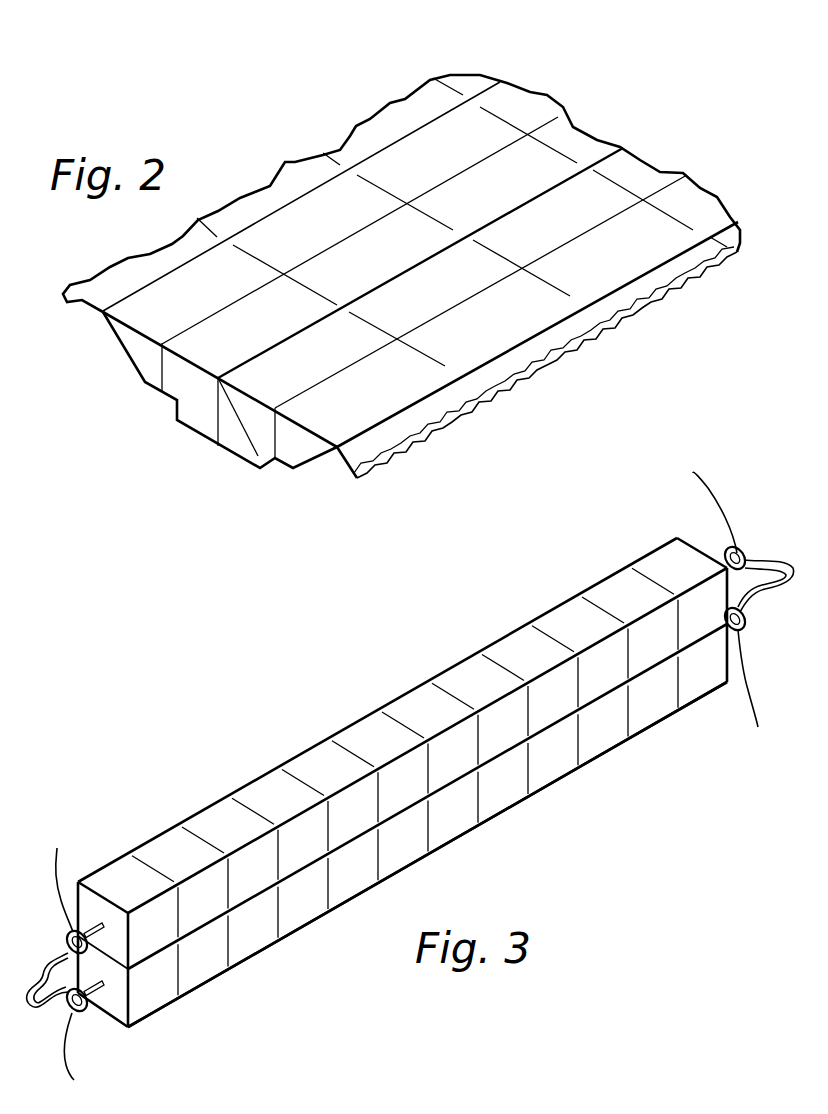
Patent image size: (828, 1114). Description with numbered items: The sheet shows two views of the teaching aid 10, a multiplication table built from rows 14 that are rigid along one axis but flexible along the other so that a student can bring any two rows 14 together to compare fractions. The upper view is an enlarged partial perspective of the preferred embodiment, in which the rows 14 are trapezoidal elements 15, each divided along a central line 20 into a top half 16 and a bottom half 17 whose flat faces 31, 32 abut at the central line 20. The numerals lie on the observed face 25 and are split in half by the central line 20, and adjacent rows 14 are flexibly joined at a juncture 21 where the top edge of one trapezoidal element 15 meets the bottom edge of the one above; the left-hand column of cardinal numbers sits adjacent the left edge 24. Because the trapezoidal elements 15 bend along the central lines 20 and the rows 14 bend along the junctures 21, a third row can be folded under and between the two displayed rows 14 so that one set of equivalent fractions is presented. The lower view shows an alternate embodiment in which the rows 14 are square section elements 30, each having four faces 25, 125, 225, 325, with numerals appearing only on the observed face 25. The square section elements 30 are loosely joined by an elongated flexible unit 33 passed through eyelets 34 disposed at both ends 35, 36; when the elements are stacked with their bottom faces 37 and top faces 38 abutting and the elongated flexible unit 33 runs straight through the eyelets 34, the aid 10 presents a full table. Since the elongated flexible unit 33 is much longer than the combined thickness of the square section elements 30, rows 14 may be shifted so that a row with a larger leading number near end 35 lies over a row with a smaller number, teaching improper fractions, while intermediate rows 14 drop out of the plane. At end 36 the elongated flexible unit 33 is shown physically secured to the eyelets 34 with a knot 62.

In FIG. 3, the teaching aid 10 is at (512, 535).
In FIG. 2, the rows 14 is at (592, 72).
In FIG. 3, the rows 14 is at (764, 526).
In FIG. 2, the trapezoidal elements 15 is at (100, 386).
In FIG. 2, the top half 16 is at (512, 130).
In FIG. 2, the bottom half 17 is at (577, 130).
In FIG. 2, the central line 20 is at (513, 136).
In FIG. 2, the juncture 21 is at (625, 203).
In FIG. 2, the left edge 24 is at (100, 418).
In FIG. 2, the observed face 25 is at (527, 325).
In FIG. 3, the observed face 25 is at (540, 770).
In FIG. 3, the square section elements 30 is at (92, 913).
In FIG. 2, the flat face 31 is at (187, 428).
In FIG. 2, the flat face 32 is at (228, 456).
In FIG. 3, the elongated flexible unit 33 is at (55, 860).
In FIG. 3, the eyelets 34 is at (66, 940).
In FIG. 3, the end 35 is at (110, 1004).
In FIG. 3, the end 36 is at (735, 632).
In FIG. 3, the bottom faces 37 is at (277, 938).
In FIG. 3, the top faces 38 is at (380, 748).
In FIG. 3, the knot 62 is at (755, 550).
In FIG. 3, the face 125 is at (270, 803).
In FIG. 3, the face 225 is at (665, 550).
In FIG. 3, the face 325 is at (603, 757).